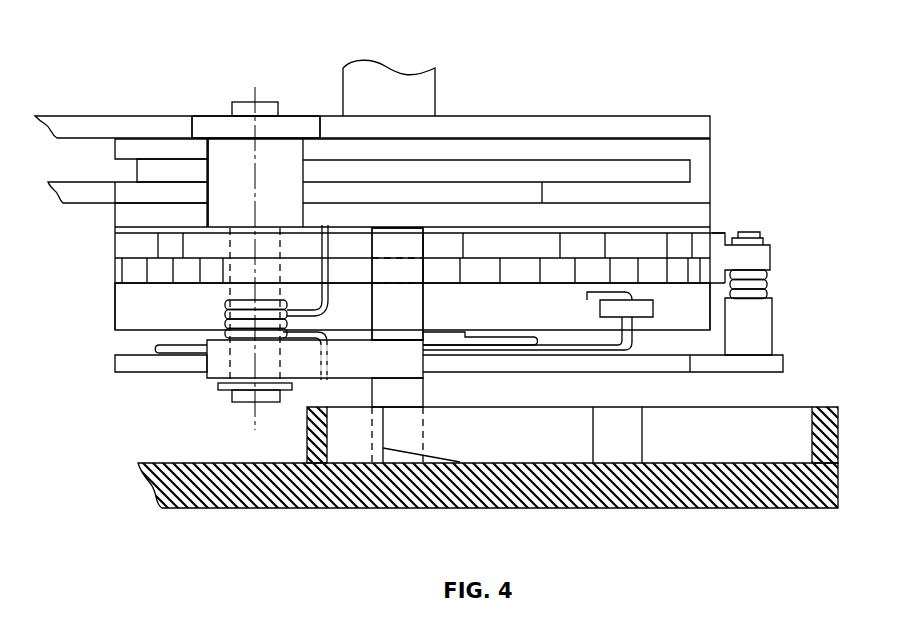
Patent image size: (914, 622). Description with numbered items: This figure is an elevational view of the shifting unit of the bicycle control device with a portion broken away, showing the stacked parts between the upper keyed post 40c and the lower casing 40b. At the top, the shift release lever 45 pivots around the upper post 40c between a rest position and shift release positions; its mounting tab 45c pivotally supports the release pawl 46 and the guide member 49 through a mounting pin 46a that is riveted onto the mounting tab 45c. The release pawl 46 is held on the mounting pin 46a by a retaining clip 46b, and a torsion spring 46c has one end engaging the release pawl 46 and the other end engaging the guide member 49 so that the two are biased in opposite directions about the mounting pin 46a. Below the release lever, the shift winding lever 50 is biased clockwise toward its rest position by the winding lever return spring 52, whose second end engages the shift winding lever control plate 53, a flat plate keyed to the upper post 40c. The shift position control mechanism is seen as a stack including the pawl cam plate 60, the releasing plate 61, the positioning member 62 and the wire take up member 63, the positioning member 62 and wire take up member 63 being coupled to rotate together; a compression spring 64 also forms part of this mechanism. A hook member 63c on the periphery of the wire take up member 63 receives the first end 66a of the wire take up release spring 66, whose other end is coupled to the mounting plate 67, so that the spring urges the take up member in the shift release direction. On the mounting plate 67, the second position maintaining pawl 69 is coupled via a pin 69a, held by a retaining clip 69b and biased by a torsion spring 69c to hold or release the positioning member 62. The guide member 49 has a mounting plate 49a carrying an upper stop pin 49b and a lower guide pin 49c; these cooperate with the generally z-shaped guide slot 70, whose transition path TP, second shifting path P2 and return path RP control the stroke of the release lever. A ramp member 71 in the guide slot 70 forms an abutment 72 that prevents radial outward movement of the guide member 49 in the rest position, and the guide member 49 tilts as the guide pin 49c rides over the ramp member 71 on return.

The shift release lever 45 is at (82, 113).
The mounting tab 45c is at (296, 126).
The upper keyed shaft or post 40c is at (437, 95).
The shift winding lever control plate 53 is at (113, 147).
The shift winding lever return spring 52 is at (148, 172).
The shift winding lever 50 is at (82, 207).
The pawl cam plate 60 is at (113, 222).
The releasing member or plate 61 is at (620, 247).
The positioning (ratchet) member or plate 62 is at (483, 268).
The release pawl 46 is at (262, 240).
The mounting pin 46a is at (207, 167).
The torsion spring 46c is at (225, 307).
The retaining clip 46b is at (228, 397).
The wire take up member 63 is at (112, 305).
The guide member 49 is at (433, 306).
The upper stop pin 49b is at (397, 248).
The mounting plate 49a is at (215, 360).
The lower guide pin 49c is at (400, 393).
The mounting plate 67 is at (128, 367).
The compression spring 64 is at (510, 340).
The wire take up release spring 66 is at (600, 353).
The first end 66a is at (590, 304).
The hook member 63c is at (650, 310).
The second position maintaining pawl 69 is at (772, 255).
The retaining clip 69b is at (765, 236).
The torsion spring 69c is at (770, 285).
The pin 69a is at (772, 325).
The lower casing 40b is at (245, 510).
The guide slot 70 is at (782, 423).
The ramp member 71 is at (437, 456).
The abutment 72 is at (380, 448).
The return path RP is at (531, 440).
The transition path TP is at (617, 440).
The second shifting path P2 is at (751, 438).